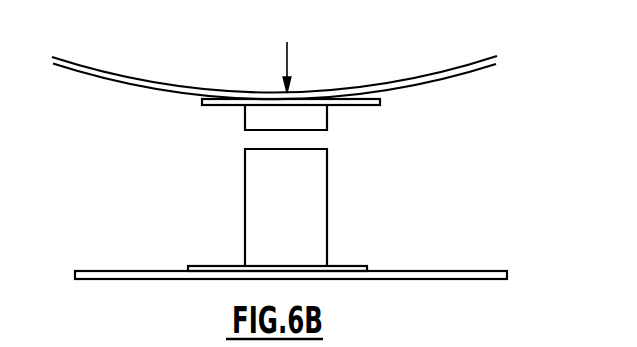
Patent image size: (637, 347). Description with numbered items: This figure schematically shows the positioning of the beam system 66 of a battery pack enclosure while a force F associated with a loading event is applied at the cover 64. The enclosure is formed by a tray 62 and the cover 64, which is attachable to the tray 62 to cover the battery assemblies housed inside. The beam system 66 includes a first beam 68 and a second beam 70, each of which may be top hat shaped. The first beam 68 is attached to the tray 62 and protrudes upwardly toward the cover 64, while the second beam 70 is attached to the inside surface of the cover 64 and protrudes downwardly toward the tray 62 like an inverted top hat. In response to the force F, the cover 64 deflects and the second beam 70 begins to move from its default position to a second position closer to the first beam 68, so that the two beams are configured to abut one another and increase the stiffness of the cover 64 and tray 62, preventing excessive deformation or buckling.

The tray 62 is at (135, 281).
The cover 64 is at (140, 83).
The beam system 66 is at (225, 166).
The first beam 68 is at (315, 220).
The second beam 70 is at (316, 114).
The force F is at (288, 58).